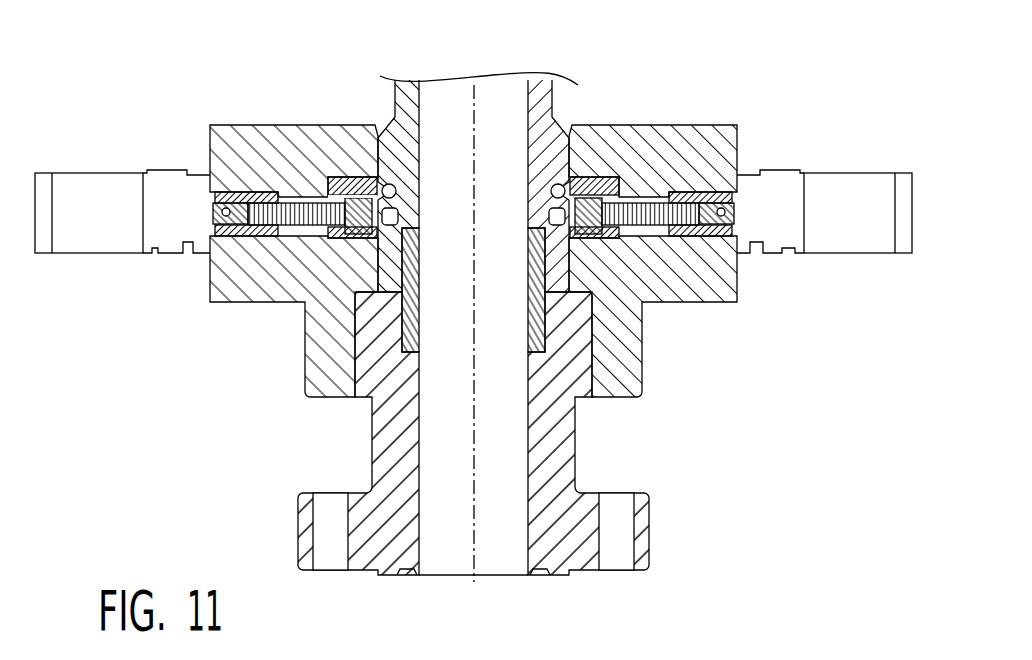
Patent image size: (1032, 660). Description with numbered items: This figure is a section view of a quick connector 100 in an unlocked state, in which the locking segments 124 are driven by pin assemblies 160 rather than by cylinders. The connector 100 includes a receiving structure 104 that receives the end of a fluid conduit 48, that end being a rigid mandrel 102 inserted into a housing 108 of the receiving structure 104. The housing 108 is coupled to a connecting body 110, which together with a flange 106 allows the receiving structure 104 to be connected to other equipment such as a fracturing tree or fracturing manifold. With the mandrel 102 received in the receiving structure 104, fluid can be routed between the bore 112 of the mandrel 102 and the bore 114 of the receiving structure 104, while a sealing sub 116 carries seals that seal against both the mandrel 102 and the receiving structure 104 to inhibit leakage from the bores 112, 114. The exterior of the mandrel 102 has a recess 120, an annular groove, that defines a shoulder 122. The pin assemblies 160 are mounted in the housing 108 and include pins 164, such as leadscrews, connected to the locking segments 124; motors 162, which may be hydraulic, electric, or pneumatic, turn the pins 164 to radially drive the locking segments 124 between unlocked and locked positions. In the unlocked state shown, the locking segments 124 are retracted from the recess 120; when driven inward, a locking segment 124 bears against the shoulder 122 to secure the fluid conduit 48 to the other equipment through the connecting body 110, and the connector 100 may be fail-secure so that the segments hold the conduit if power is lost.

The fluid conduit 48 is at (553, 45).
The quick connector 100 is at (472, 323).
The mandrel 102 is at (551, 90).
The receiving structure 104 is at (594, 401).
The flange 106 is at (645, 533).
The housing 108 is at (637, 386).
The connecting body 110 is at (568, 452).
The bore 112 is at (420, 162).
The bore 114 is at (421, 430).
The sealing sub 116 is at (409, 335).
The recess 120 is at (393, 186).
The shoulder 122 is at (397, 219).
The locking segments 124 is at (352, 194).
The pin assemblies 160 is at (247, 182).
The motors 162 is at (97, 246).
The pins 164 is at (292, 220).